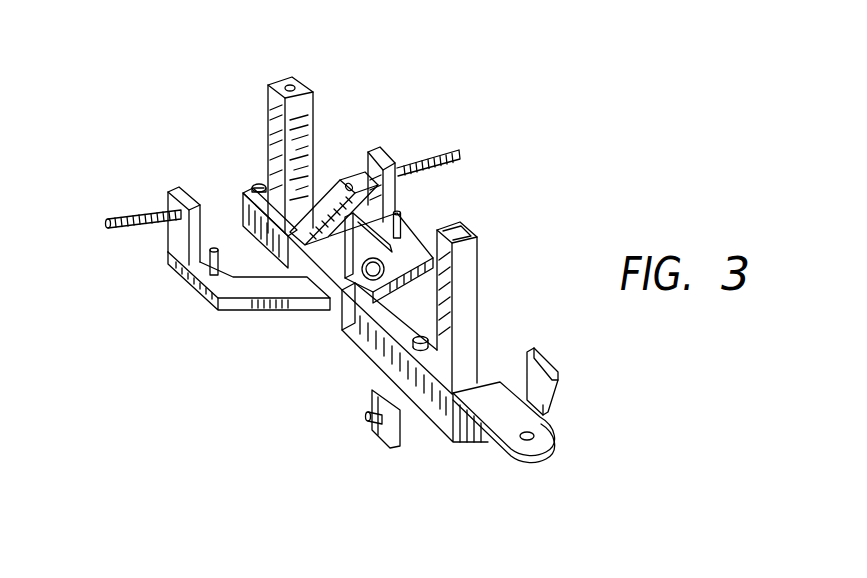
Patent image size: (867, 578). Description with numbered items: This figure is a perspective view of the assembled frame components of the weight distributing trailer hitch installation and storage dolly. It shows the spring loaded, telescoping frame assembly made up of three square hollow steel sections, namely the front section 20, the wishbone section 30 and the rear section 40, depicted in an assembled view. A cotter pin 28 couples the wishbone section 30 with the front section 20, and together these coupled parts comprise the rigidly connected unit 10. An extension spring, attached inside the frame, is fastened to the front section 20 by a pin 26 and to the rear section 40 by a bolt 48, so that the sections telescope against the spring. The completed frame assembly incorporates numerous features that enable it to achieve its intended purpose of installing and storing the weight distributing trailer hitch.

The rigidly connected unit 10 is at (213, 324).
The front section 20 is at (252, 214).
The pin 26 is at (258, 184).
The cotter pin 28 is at (366, 272).
The wishbone section 30 is at (332, 290).
The rear section 40 is at (444, 404).
The bolt 48 is at (413, 344).